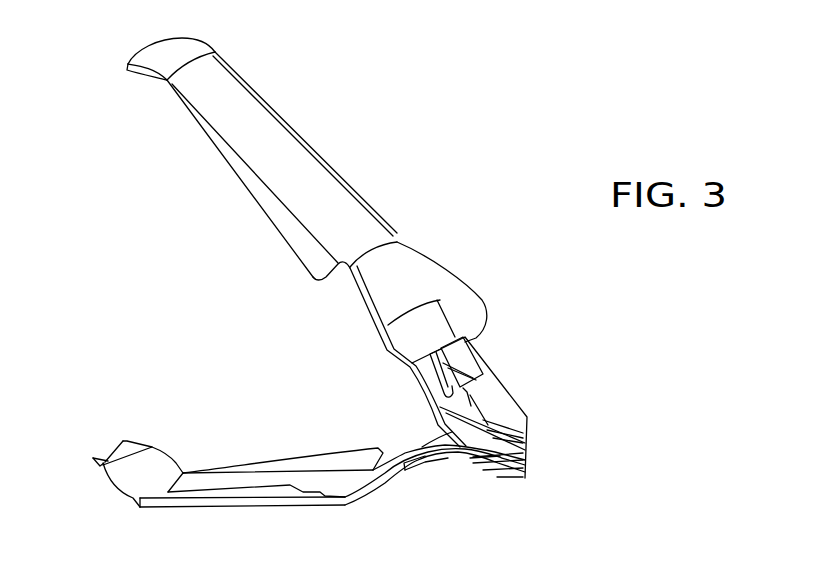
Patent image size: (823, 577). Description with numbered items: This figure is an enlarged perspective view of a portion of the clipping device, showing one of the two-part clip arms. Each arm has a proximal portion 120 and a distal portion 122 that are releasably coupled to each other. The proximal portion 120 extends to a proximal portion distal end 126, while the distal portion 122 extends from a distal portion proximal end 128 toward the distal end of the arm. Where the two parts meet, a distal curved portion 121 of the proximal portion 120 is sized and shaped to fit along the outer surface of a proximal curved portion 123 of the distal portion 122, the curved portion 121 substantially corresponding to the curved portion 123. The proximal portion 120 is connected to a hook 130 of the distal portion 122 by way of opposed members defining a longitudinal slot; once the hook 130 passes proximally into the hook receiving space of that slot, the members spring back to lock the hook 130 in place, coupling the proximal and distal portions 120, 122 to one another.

The proximal portion 120 is at (513, 417).
The distal curved portion 121 is at (430, 468).
The distal portion 122 is at (327, 187).
The proximal curved portion 123 is at (428, 455).
The proximal portion distal end 126 is at (468, 340).
The distal portion proximal end 128 is at (478, 460).
The hook 130 is at (472, 380).